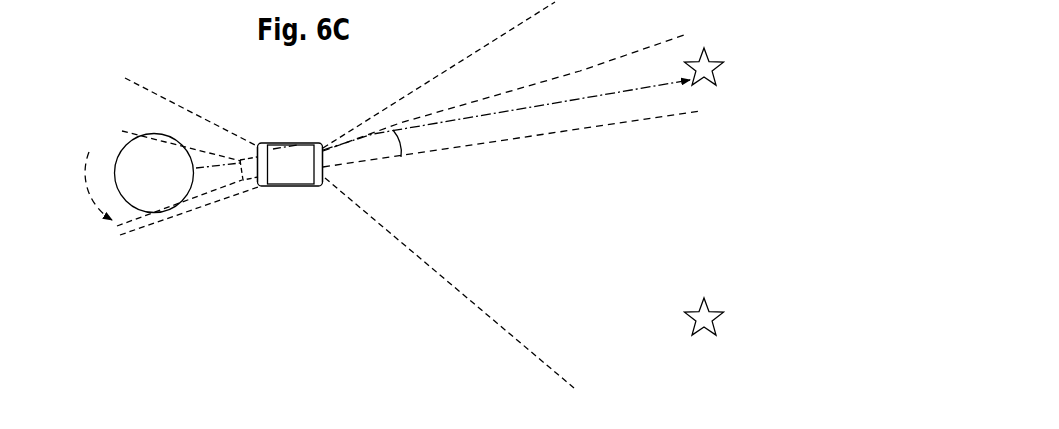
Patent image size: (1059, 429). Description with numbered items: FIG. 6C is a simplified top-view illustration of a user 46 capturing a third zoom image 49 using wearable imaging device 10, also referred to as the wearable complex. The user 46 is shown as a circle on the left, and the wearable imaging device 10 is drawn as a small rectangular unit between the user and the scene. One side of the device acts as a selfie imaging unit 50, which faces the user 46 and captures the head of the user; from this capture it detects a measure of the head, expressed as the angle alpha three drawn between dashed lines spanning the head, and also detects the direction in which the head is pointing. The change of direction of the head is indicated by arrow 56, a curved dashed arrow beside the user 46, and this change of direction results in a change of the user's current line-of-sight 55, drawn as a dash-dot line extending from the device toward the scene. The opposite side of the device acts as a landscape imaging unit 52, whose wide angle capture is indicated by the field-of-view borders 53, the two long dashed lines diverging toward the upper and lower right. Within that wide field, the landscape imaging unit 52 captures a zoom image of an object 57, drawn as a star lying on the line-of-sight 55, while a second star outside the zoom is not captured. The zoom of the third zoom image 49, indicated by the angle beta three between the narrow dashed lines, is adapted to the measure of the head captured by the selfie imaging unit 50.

The wearable imaging device 10 is at (290, 141).
The user 46 is at (119, 153).
The third zoom image 49 is at (664, 115).
The selfie imaging unit 50 is at (263, 157).
The landscape imaging unit 52 is at (319, 153).
The field-of-view borders 53 is at (497, 42).
The line-of-sight 55 is at (513, 115).
The arrow 56 is at (82, 175).
The object 57 is at (722, 51).